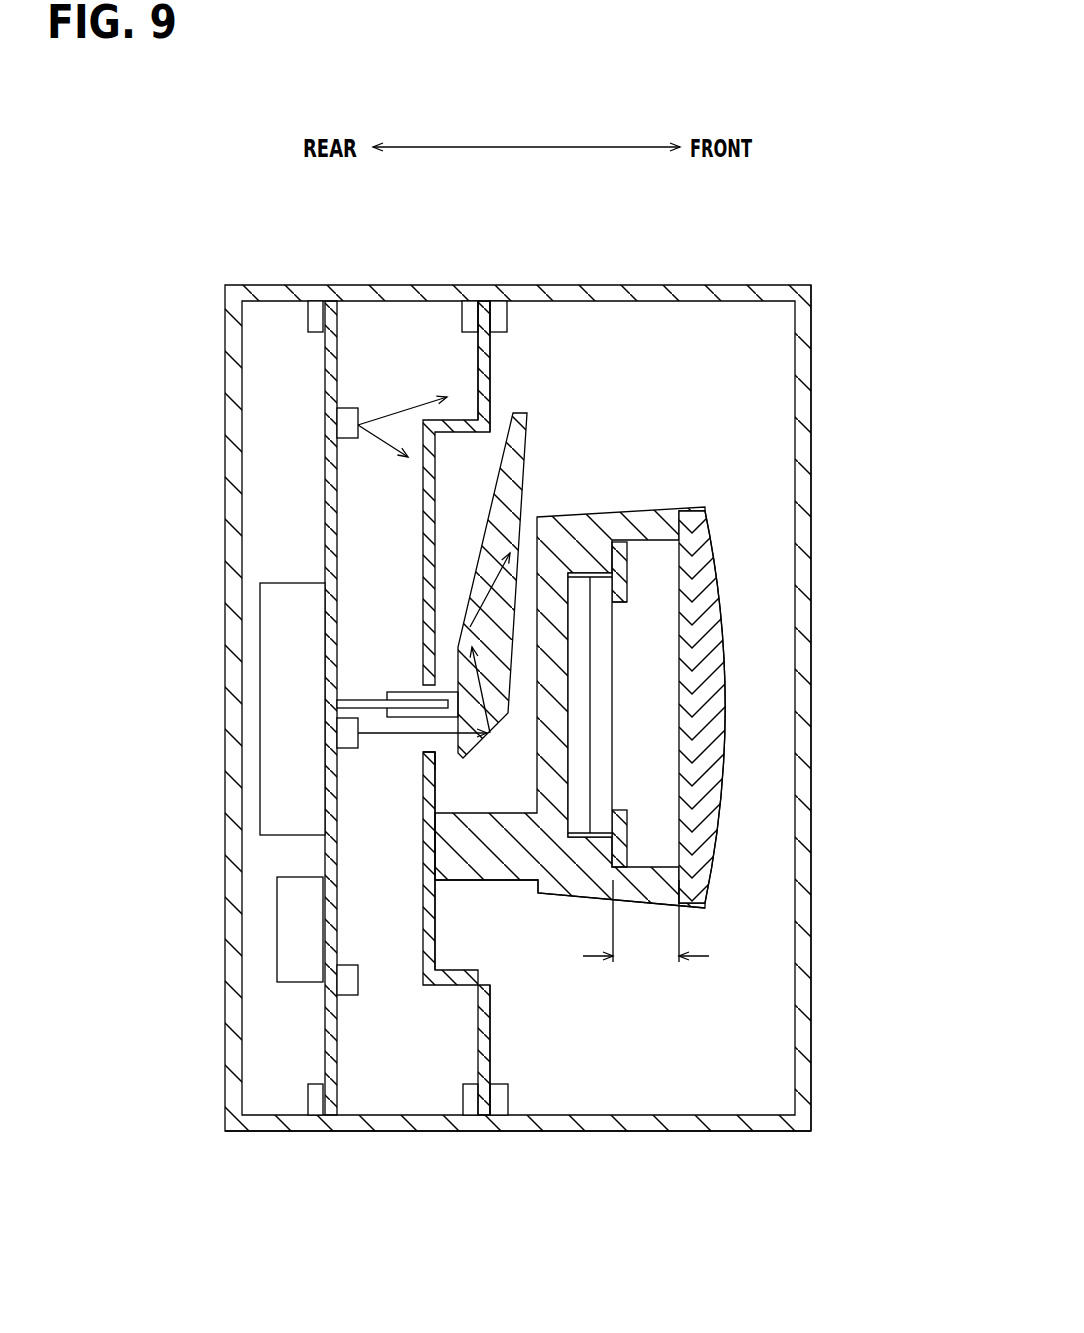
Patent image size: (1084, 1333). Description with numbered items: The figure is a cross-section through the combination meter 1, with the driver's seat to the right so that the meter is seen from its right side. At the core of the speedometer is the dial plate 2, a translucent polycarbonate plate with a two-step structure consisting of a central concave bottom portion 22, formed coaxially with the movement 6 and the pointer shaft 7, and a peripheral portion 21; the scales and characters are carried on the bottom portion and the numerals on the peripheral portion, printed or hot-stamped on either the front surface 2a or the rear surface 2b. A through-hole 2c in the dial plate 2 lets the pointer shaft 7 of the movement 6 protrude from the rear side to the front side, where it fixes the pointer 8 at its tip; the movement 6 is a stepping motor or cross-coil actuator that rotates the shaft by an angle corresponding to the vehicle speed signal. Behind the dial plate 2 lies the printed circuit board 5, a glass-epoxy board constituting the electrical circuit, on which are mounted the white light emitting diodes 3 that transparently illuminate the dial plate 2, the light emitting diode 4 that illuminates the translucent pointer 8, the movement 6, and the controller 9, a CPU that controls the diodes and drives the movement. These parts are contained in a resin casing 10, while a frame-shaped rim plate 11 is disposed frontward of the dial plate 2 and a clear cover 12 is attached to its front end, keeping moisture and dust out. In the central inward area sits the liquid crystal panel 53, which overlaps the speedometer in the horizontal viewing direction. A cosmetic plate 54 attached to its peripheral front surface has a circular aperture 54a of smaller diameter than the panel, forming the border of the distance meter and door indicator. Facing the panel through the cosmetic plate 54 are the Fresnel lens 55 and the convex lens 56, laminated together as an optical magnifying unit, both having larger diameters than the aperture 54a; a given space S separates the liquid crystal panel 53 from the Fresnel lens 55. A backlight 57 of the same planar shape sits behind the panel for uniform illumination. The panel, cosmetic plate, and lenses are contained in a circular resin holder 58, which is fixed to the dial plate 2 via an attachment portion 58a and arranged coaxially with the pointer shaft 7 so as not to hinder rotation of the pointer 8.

The combination meter 1 is at (156, 140).
The dial plate 2 is at (493, 1062).
The front surface 2a is at (490, 363).
The rear surface 2b is at (478, 360).
The through-hole 2c is at (422, 750).
The light emitting diodes 3 is at (348, 408).
The light emitting diode 4 is at (347, 748).
The printed circuit board 5 is at (337, 340).
The movement 6 is at (260, 602).
The pointer shaft 7 is at (360, 700).
The pointer 8 is at (528, 426).
The controller 9 is at (300, 983).
The casing 10 is at (427, 1132).
The rim plate 11 is at (770, 1133).
The clear cover 12 is at (812, 1085).
The peripheral portion 21 is at (491, 1012).
The bottom portion 22 is at (435, 943).
The liquid crystal panel 53 is at (614, 677).
The cosmetic plate 54 is at (631, 585).
The aperture 54a is at (627, 604).
The Fresnel lens 55 is at (712, 565).
The convex lens 56 is at (711, 535).
The backlight 57 is at (594, 705).
The holder 58 is at (652, 507).
The attachment portion 58a is at (482, 883).
The space S is at (646, 921).